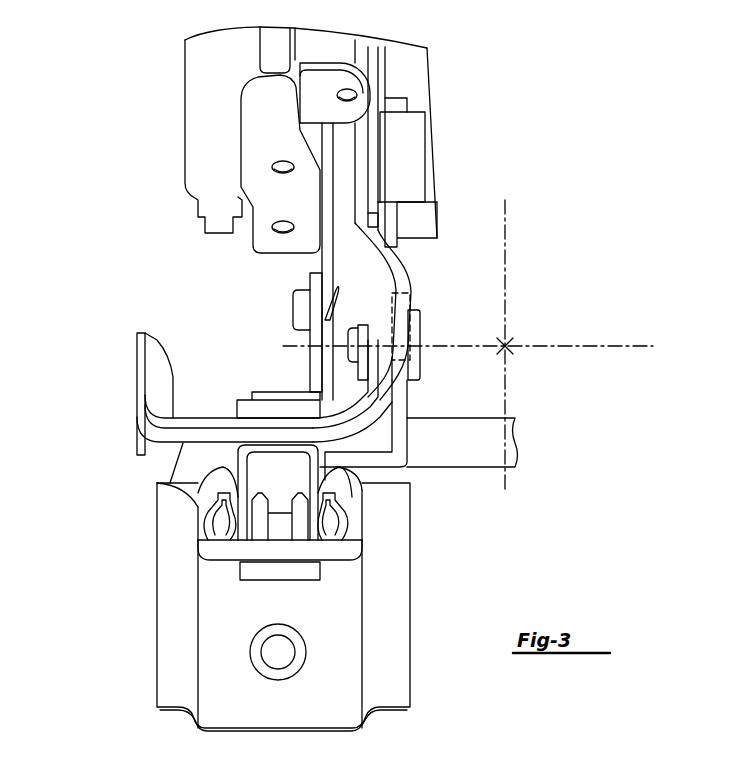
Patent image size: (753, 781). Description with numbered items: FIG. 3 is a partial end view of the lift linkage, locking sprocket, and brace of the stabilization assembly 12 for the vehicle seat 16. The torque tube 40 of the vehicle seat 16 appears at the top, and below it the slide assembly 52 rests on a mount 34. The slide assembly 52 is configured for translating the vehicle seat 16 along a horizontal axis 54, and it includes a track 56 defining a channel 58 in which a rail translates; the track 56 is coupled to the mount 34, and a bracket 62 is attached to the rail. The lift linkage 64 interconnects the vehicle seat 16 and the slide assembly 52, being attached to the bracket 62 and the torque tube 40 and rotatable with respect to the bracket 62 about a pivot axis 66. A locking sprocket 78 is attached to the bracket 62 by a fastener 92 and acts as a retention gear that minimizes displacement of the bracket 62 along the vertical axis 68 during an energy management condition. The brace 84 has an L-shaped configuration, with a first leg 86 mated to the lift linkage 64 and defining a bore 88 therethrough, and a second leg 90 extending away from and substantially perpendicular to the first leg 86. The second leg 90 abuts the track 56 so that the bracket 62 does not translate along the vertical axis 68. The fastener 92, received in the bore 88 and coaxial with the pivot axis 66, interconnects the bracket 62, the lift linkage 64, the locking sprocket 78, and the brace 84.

The stabilization assembly 12 is at (78, 95).
The vehicle seat 16 is at (163, 82).
The mount 34 is at (398, 682).
The torque tube 40 is at (407, 153).
The slide assembly 52 is at (365, 552).
The horizontal axis 54 is at (510, 340).
The track 56 is at (222, 550).
The channel 58 is at (230, 517).
The bracket 62 is at (142, 377).
The lift linkage 64 is at (413, 283).
The pivot axis 66 is at (636, 345).
The vertical axis 68 is at (505, 250).
The locking sprocket 78 is at (422, 337).
The brace 84 is at (412, 365).
The first leg 86 is at (400, 404).
The bore 88 is at (428, 370).
The second leg 90 is at (357, 460).
The fastener 92 is at (345, 368).